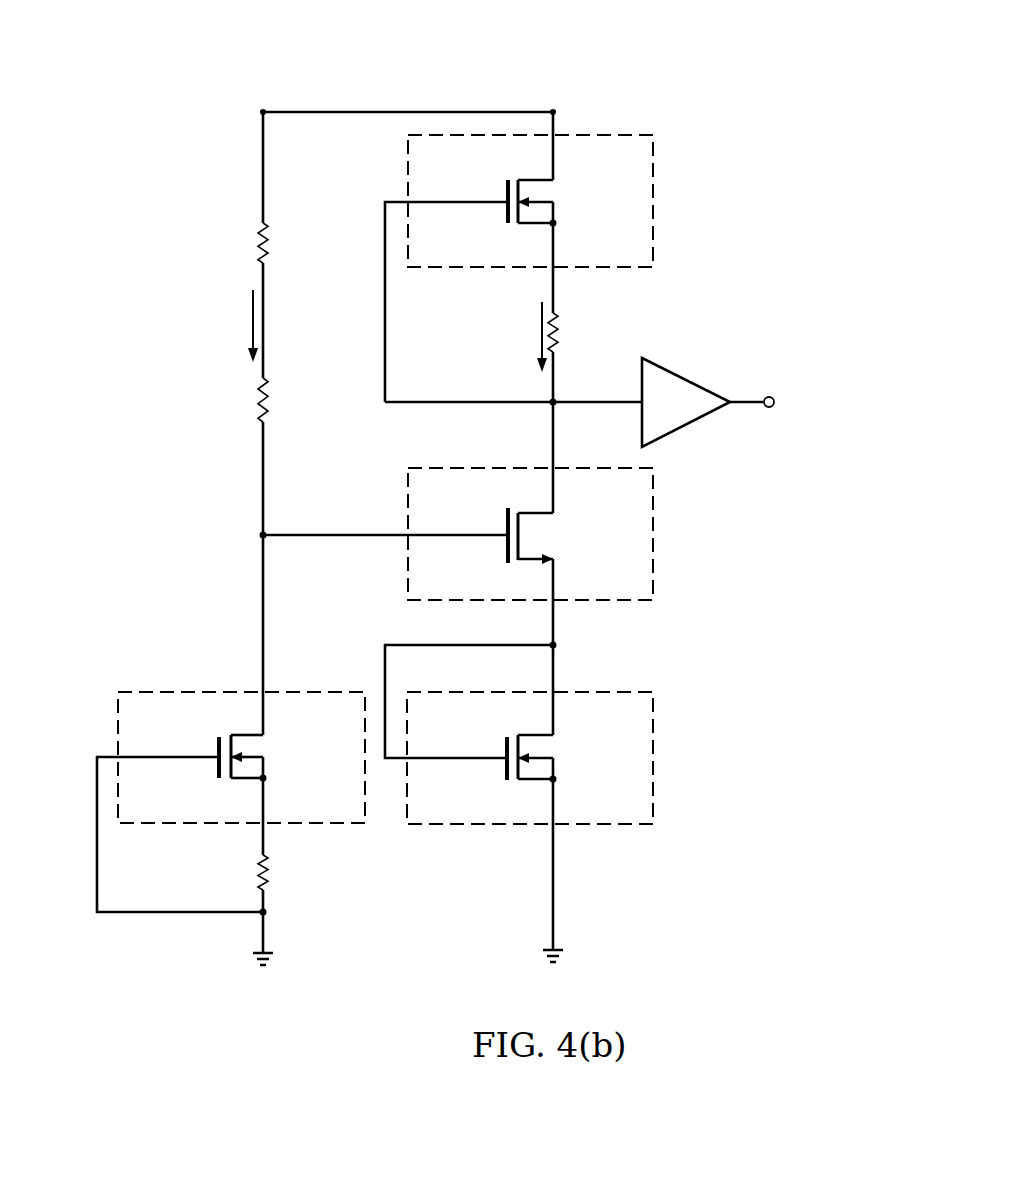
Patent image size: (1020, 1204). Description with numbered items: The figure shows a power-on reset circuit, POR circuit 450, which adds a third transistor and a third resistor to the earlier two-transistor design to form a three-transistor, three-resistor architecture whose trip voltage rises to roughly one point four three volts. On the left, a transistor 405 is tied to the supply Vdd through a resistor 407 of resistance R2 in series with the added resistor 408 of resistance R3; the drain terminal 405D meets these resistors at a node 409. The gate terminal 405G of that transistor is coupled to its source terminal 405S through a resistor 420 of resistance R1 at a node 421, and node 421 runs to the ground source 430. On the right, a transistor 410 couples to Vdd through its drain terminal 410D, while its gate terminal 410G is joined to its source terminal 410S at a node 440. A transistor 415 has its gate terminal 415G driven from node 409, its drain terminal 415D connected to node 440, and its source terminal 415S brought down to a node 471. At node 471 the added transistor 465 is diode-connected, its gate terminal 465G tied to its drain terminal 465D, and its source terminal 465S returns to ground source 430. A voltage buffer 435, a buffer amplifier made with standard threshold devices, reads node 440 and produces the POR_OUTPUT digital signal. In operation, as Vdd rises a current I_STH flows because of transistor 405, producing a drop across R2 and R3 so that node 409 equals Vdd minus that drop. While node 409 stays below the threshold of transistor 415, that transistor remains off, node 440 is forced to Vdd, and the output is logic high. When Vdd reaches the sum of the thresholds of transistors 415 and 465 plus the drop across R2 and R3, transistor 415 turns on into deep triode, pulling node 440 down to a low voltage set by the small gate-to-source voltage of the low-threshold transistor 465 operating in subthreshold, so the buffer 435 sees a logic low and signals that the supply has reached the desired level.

The POR circuit 450 is at (294, 64).
The transistor 405 is at (198, 802).
The gate terminal 405G is at (217, 767).
The drain terminal 405D is at (255, 742).
The source terminal 405S is at (263, 786).
The resistor 407 is at (258, 245).
The resistor 408 is at (258, 400).
The node 409 is at (260, 533).
The transistor 410 is at (558, 268).
The gate terminal 410G is at (506, 195).
The drain terminal 410D is at (545, 186).
The source terminal 410S is at (553, 232).
The transistor 415 is at (573, 534).
The gate terminal 415G is at (506, 525).
The drain terminal 415D is at (545, 518).
The source terminal 415S is at (538, 553).
The resistor 420 is at (258, 866).
The node 421 is at (268, 914).
The ground source 430 is at (250, 956).
The voltage buffer 435 is at (712, 360).
The node 440 is at (560, 410).
The transistor 465 is at (573, 758).
The gate terminal 465G is at (505, 770).
The drain terminal 465D is at (545, 742).
The source terminal 465S is at (553, 786).
The node 471 is at (560, 650).